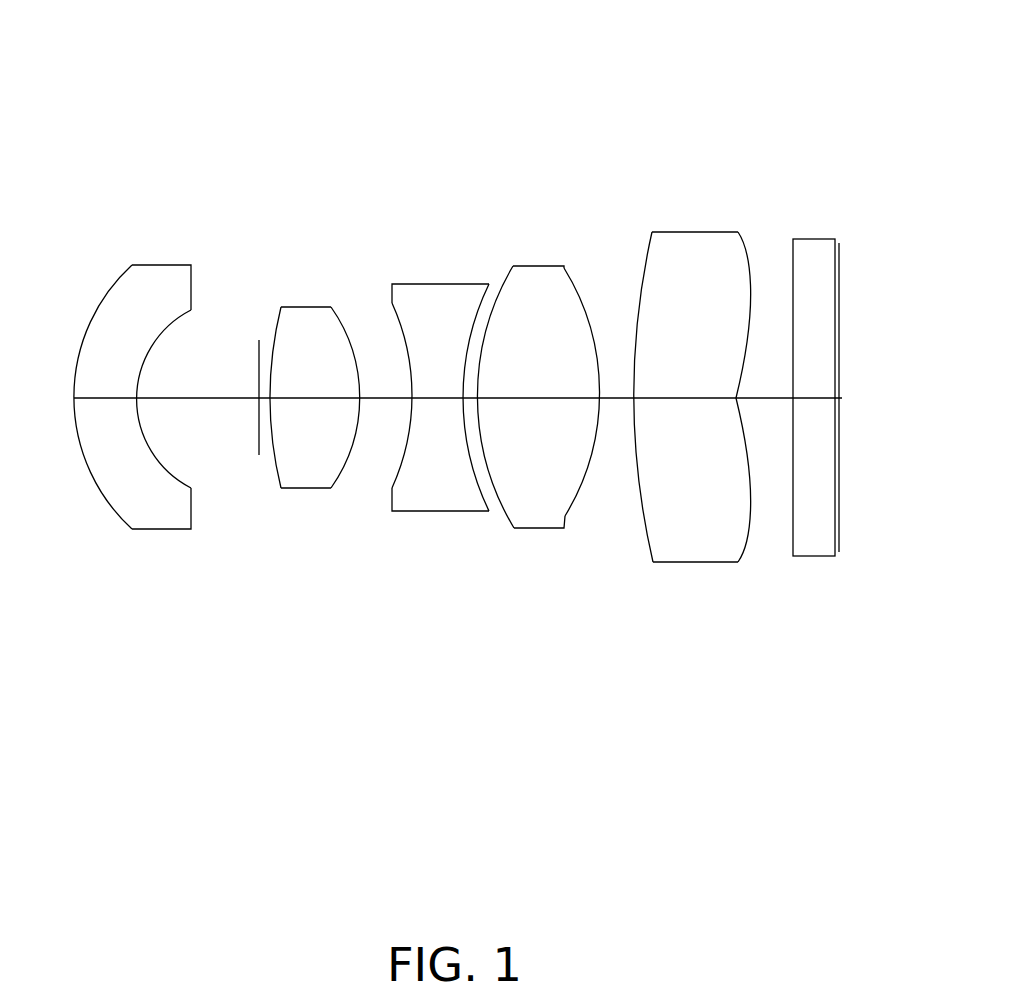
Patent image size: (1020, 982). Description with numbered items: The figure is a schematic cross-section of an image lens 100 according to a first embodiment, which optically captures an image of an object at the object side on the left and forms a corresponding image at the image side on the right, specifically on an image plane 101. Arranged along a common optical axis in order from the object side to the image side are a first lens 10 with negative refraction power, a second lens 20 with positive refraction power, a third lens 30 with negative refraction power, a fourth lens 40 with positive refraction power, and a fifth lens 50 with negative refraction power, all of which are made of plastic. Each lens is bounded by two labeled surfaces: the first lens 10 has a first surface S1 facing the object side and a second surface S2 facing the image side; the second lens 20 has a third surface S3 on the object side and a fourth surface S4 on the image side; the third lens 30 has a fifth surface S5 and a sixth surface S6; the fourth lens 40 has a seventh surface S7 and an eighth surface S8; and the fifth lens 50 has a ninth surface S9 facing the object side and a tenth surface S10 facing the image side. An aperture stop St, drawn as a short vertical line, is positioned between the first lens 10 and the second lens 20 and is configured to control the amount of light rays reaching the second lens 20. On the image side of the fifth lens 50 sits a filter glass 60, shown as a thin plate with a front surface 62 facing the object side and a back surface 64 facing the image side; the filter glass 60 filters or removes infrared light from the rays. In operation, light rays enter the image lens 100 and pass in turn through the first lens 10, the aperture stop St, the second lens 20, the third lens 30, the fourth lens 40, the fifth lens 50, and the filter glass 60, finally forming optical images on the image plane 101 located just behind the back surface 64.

The image lens 100 is at (457, 36).
The first lens 10 is at (144, 409).
The second lens 20 is at (299, 402).
The third lens 30 is at (426, 403).
The fourth lens 40 is at (538, 399).
The fifth lens 50 is at (705, 398).
The filter glass 60 is at (824, 400).
The front surface 62 is at (793, 537).
The back surface 64 is at (836, 243).
The image plane 101 is at (838, 535).
The aperture stop St is at (259, 447).
The first surface S1 is at (107, 296).
The second surface S2 is at (160, 337).
The third surface S3 is at (274, 334).
The fourth surface S4 is at (335, 313).
The fifth surface S5 is at (397, 317).
The sixth surface S6 is at (489, 292).
The seventh surface S7 is at (512, 267).
The eighth surface S8 is at (566, 268).
The ninth surface S9 is at (650, 253).
The tenth surface S10 is at (743, 243).